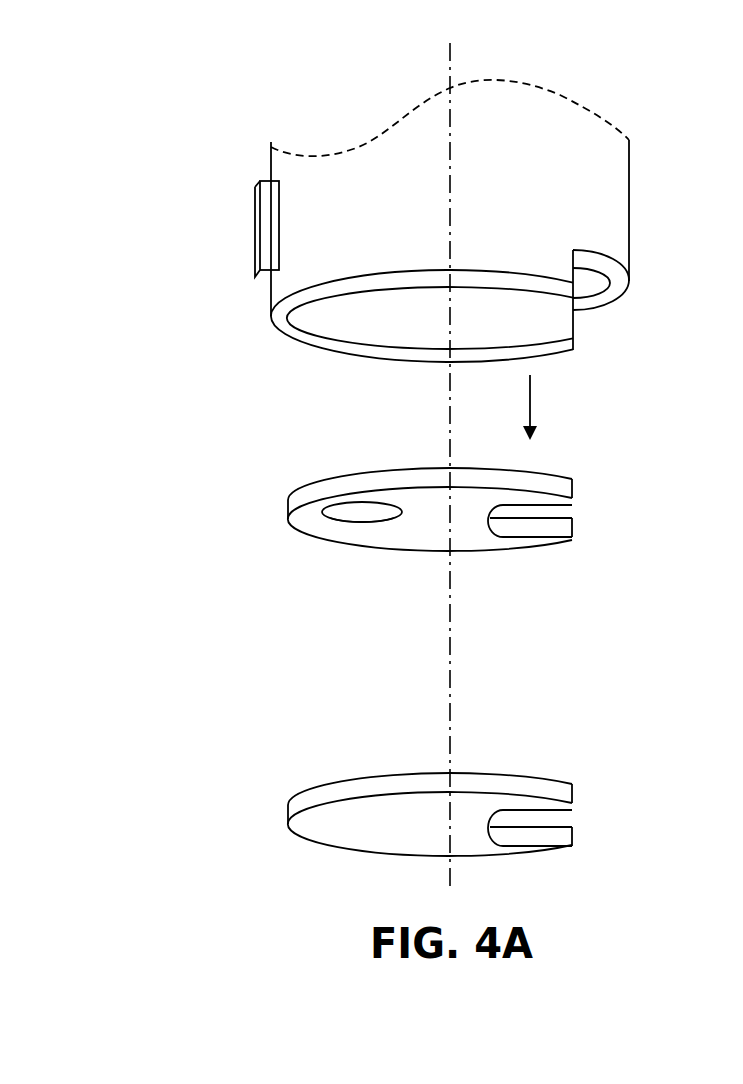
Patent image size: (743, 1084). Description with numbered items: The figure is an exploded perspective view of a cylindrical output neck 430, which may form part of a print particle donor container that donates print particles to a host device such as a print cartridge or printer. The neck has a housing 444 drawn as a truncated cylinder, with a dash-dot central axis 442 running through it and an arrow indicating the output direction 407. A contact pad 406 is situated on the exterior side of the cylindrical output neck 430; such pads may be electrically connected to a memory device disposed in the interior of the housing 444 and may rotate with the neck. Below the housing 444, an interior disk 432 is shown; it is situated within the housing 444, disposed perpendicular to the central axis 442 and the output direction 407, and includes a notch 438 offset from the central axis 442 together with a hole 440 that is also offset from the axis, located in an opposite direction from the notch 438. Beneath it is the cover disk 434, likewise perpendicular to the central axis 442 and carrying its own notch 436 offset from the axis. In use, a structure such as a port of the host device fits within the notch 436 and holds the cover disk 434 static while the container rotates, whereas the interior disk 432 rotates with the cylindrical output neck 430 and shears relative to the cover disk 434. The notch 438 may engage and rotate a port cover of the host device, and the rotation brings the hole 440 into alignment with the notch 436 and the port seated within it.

The cylindrical output neck 430 is at (236, 96).
The contact pad 406 is at (255, 222).
The housing 444 is at (629, 203).
The central axis 442 is at (449, 422).
The output direction 407 is at (530, 400).
The interior disk 432 is at (288, 511).
The notch 438 is at (494, 508).
The hole 440 is at (323, 527).
The cover disk 434 is at (288, 818).
The notch 436 is at (494, 812).